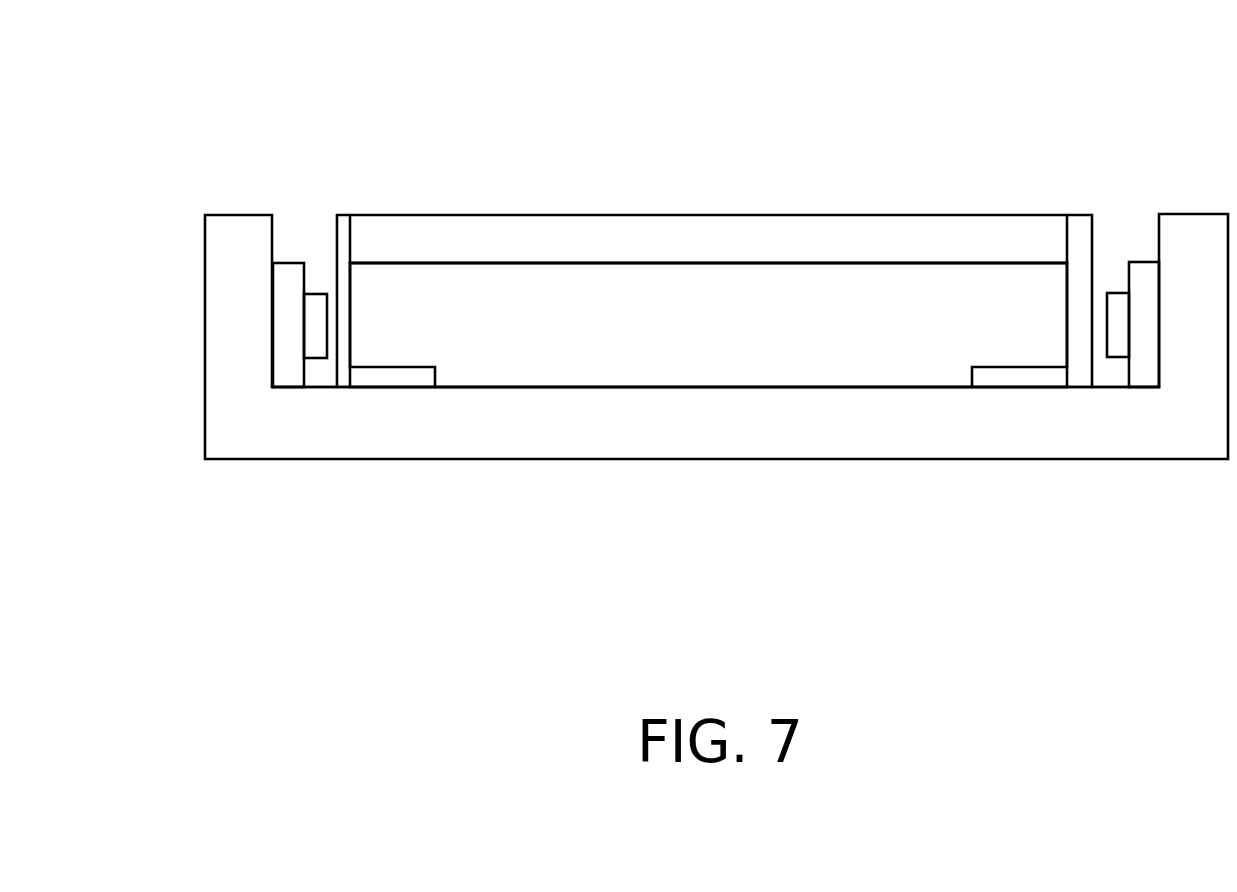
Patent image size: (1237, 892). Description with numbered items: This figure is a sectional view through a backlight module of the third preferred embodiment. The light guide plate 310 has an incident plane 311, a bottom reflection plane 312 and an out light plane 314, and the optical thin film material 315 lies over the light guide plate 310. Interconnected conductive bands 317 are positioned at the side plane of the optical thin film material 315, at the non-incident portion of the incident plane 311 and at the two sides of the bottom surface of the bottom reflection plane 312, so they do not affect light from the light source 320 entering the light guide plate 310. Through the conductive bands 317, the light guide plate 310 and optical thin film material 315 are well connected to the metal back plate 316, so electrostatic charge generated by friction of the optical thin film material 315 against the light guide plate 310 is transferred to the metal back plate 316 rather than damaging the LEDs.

The light guide plate 310 is at (871, 313).
The incident plane 311 is at (350, 288).
The bottom reflection plane 312 is at (646, 387).
The out light plane 314 is at (728, 263).
The optical thin film material 315 is at (510, 240).
The metal back plate 316 is at (420, 423).
The conductive bands 317 is at (1082, 243).
The light source 320 is at (292, 288).